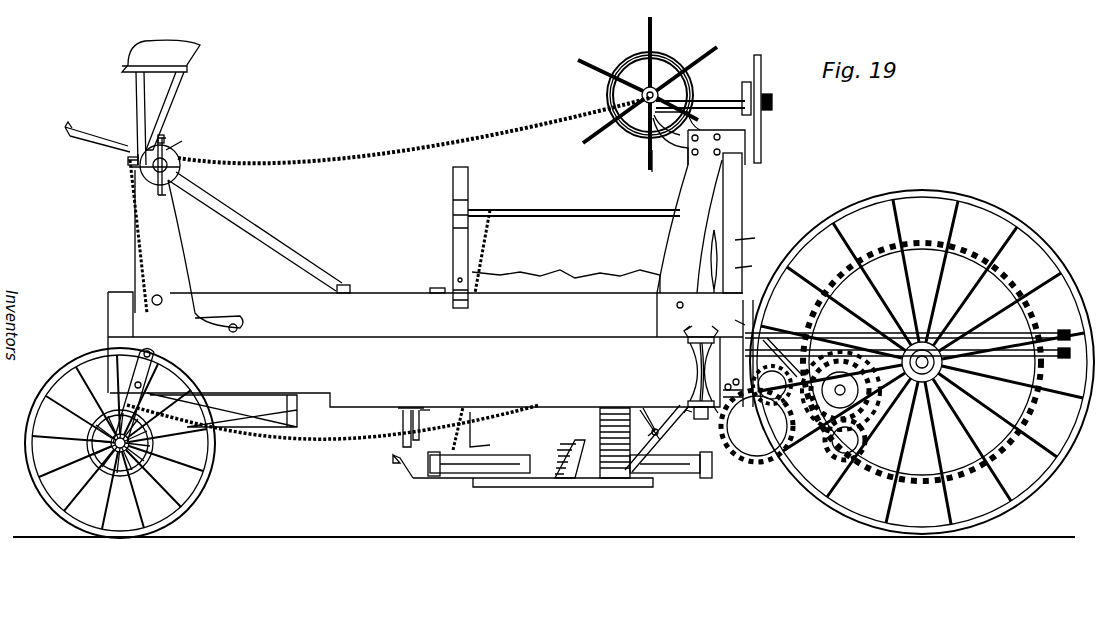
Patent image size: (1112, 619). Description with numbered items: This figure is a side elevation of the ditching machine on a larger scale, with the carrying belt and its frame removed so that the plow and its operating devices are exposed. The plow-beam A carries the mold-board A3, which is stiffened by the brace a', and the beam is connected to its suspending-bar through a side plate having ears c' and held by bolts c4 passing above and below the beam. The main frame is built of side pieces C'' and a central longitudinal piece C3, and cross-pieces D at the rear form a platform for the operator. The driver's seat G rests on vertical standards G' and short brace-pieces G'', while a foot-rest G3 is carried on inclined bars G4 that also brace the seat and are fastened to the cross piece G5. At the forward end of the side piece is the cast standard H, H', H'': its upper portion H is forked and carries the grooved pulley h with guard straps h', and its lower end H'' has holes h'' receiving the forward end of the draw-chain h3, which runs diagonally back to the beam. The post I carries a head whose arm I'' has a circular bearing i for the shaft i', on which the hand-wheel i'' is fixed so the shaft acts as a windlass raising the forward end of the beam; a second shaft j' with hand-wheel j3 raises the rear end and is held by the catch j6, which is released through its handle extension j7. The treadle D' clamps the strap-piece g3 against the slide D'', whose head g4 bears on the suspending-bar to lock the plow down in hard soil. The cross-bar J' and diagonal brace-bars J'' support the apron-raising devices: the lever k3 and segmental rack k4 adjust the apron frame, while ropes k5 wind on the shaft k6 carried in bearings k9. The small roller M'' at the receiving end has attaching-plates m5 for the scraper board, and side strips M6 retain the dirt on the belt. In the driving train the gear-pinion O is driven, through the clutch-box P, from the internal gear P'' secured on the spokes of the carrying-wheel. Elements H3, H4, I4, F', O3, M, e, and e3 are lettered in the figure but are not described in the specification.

The seat G is at (171, 56).
The vertical standards G' is at (129, 118).
The short brace-pieces G'' is at (174, 111).
The foot-rest G3 is at (97, 135).
The inclined bars G4 is at (255, 231).
The cross piece G5 is at (361, 283).
The grooved pulley h is at (160, 166).
The stirrups or straps h' is at (153, 213).
The holes h'' is at (306, 409).
The draw-chain h3 is at (388, 269).
The upper portion of standard H is at (189, 251).
The standard portion H' is at (156, 342).
The lower portion of standard H'' is at (380, 430).
The front wheel H3 is at (120, 443).
The front axle bracket H4 is at (341, 443).
The side pieces C'' is at (425, 315).
The central longitudinal piece C3 is at (701, 372).
The bolts c4 is at (696, 364).
The ears c' is at (478, 427).
The plow-beam A is at (415, 382).
The mold-board A3 is at (600, 480).
The lever k3 is at (756, 235).
The segmental rack k4 is at (754, 265).
The ropes or chains k5 is at (491, 251).
The shaft k6 is at (574, 201).
The bearings k9 is at (444, 237).
The cross-bar J' is at (437, 273).
The diagonal brace-bars J'' is at (630, 201).
The post or standard I is at (699, 213).
The arm I'' is at (676, 139).
The bearing plate I4 is at (716, 147).
The circular head i is at (647, 93).
The shaft i' is at (666, 103).
The hand-wheel i'' is at (650, 90).
The shaft j' is at (700, 89).
The hand-wheel j3 is at (771, 109).
The catch j6 is at (780, 98).
The extension j7 is at (749, 86).
The cross-pieces D is at (912, 362).
The foot lever or treadle D' is at (743, 337).
The slide D'' is at (745, 223).
The driving wheel F' is at (922, 357).
The clutch-box P is at (841, 391).
The internal gear P'' is at (907, 307).
The gear-pinion O is at (757, 426).
The intermediate gear O3 is at (851, 440).
The strap-piece g3 is at (731, 325).
The plate or head g4 is at (761, 371).
The engine casing M is at (566, 281).
The roller M'' is at (550, 455).
The side strips M6 is at (658, 409).
The plates or straps m5 is at (455, 460).
The brace a' is at (656, 438).
The foot bracket e is at (403, 461).
The hanger block e3 is at (432, 418).